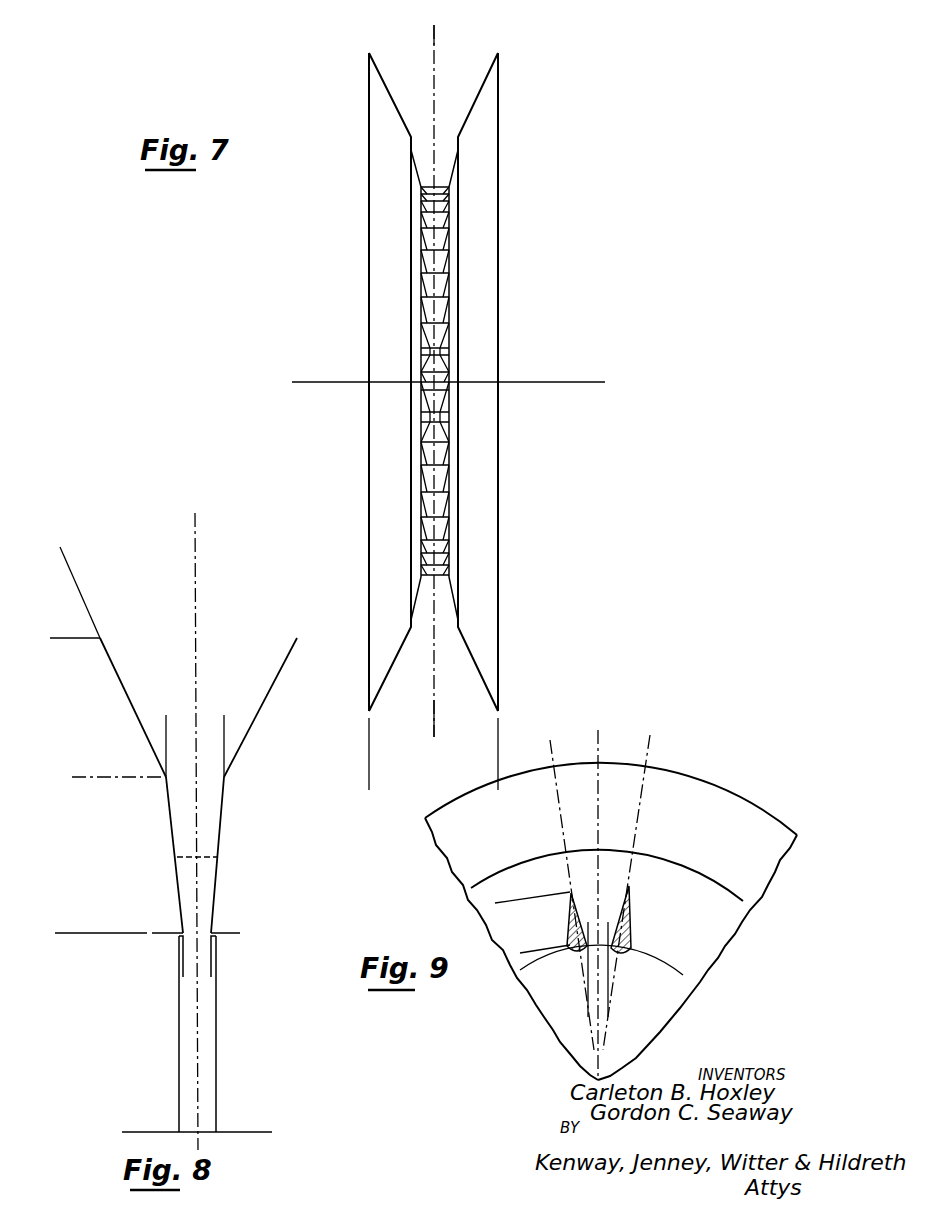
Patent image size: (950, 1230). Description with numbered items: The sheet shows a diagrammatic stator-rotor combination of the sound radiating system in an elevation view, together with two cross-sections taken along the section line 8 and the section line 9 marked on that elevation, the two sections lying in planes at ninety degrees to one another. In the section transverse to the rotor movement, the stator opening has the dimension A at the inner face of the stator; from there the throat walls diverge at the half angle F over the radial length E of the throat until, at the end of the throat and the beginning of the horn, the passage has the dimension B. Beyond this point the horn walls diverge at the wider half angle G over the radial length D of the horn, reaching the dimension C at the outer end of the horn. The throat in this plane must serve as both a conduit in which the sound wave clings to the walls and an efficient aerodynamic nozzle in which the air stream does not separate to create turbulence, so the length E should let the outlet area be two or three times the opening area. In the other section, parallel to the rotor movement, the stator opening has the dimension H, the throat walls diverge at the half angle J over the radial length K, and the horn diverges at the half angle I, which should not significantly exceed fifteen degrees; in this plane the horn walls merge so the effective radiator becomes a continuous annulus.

In FIG. 7, the section line 8— 8 is at (313, 382).
In FIG. 7, the section line 9— 9 is at (436, 33).
In FIG. 8, the stator opening dimension A is at (245, 965).
In FIG. 8, the throat end dimension B is at (222, 735).
In FIG. 7, the horn outer end dimension C is at (497, 757).
In FIG. 8, the horn outer end dimension C is at (104, 638).
In FIG. 8, the radial length of the horn D is at (72, 640).
In FIG. 8, the radial length of the throat E is at (72, 779).
In FIG. 8, the half angle of divergence of the throat walls F is at (238, 802).
In FIG. 8, the half angle of divergence of the horn walls G is at (190, 547).
In FIG. 9, the stator opening dimension H is at (640, 978).
In FIG. 9, the half angle of divergence of the horn I is at (662, 798).
In FIG. 9, the half angle of divergence of the throat J is at (630, 889).
In FIG. 9, the radial length of the throat K is at (527, 900).